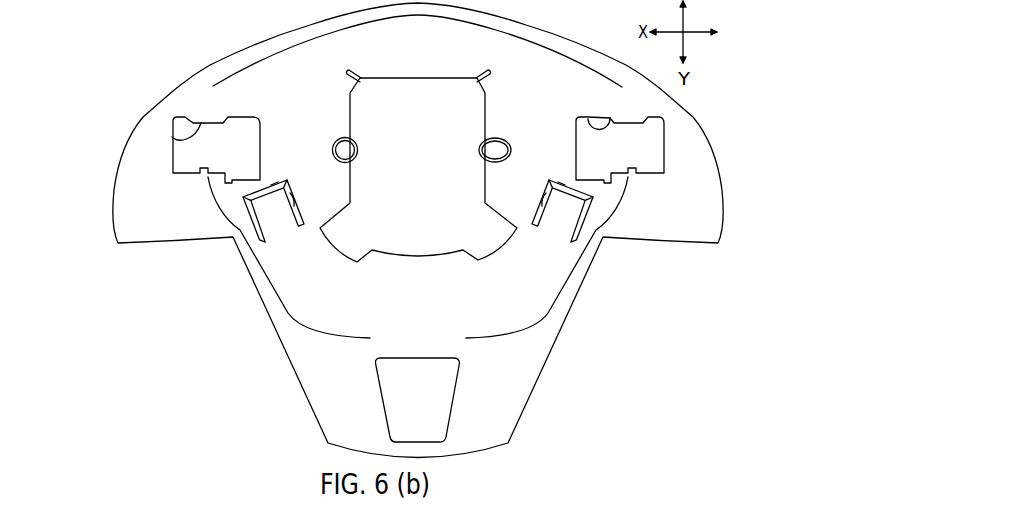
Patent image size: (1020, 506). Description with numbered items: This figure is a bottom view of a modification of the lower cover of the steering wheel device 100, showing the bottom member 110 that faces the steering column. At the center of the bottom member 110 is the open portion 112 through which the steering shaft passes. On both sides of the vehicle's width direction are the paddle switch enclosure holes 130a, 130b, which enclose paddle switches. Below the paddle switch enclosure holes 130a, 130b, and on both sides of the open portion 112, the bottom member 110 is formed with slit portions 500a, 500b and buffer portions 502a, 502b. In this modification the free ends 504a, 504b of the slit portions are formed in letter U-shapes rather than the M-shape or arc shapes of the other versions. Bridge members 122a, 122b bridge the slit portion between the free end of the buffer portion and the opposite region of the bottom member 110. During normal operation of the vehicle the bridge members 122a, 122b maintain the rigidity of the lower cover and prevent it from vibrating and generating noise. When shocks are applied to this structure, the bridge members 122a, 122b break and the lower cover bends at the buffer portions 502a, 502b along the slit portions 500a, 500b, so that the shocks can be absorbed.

The steering wheel device 100 is at (193, 47).
The bottom member 110 is at (272, 65).
The open portion 112 is at (352, 188).
The bridge member 122a is at (267, 218).
The bridge member 122b is at (243, 198).
The paddle switch enclosure hole 130a is at (172, 137).
The paddle switch enclosure hole 130b is at (588, 119).
The slit portion 500a is at (292, 178).
The slit portion 500b is at (545, 177).
The buffer portion 502a is at (247, 240).
The buffer portion 502b is at (592, 247).
The free end 504a is at (273, 178).
The free end 504b is at (571, 183).